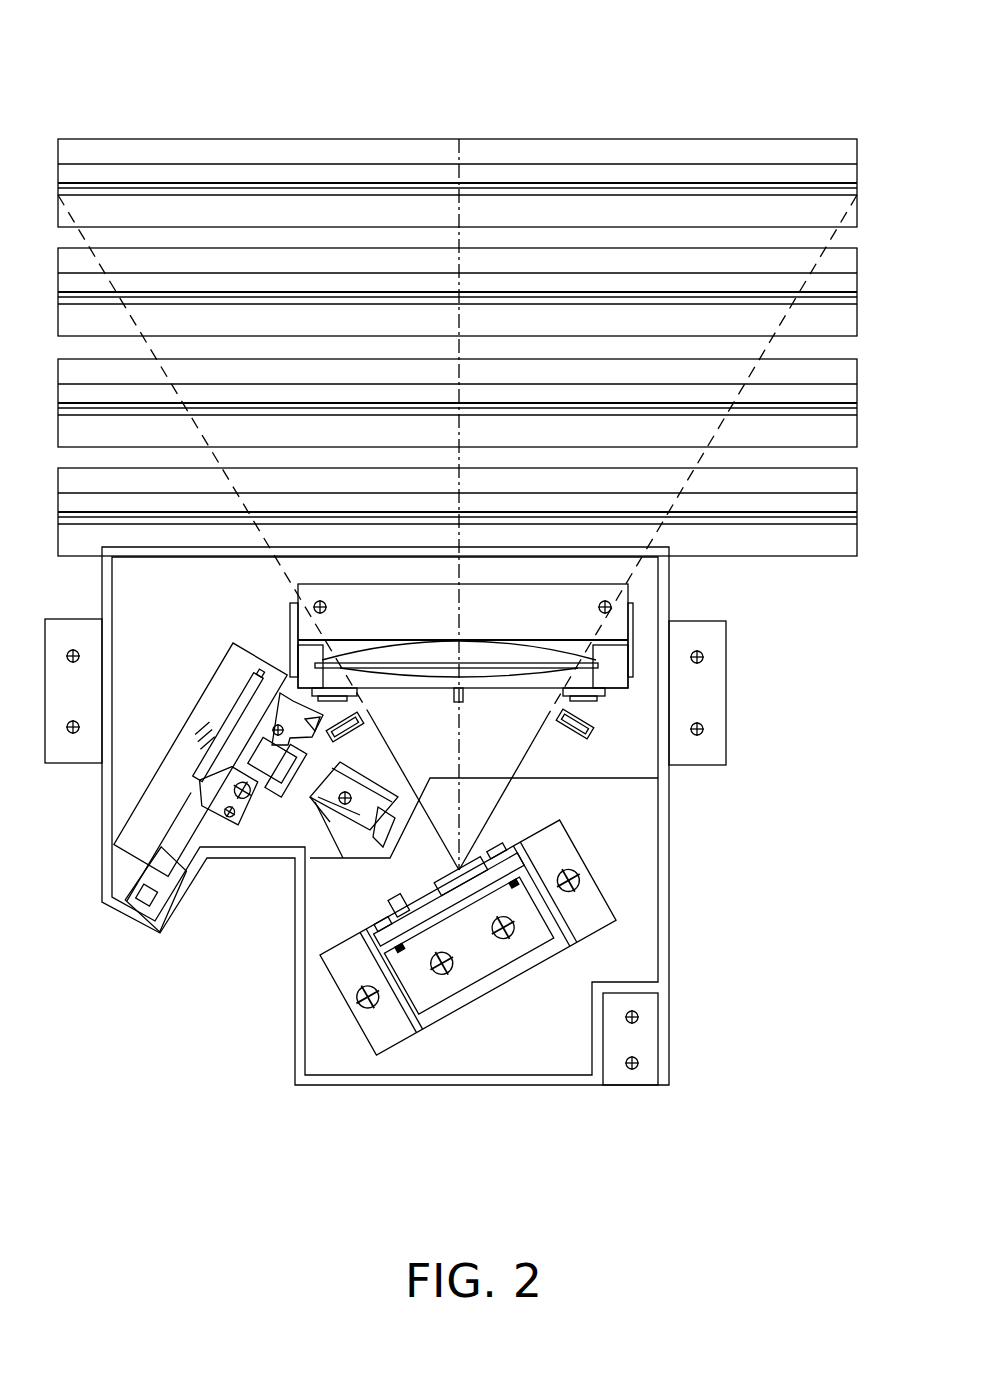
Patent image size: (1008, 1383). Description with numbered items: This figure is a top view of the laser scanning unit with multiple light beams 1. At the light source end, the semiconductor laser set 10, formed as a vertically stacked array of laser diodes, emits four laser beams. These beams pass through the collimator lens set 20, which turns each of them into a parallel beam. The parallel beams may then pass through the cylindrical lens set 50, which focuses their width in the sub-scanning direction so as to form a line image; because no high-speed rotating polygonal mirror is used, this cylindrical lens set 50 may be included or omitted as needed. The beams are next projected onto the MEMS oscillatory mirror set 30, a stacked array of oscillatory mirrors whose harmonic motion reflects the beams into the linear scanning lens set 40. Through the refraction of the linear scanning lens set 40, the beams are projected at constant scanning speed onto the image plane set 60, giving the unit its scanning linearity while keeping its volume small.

The laser scanning unit with multiple light beams 1 is at (559, 127).
The semiconductor laser set 10 is at (196, 749).
The collimator lens set 20 is at (238, 724).
The MEMS oscillatory mirror set 30 is at (433, 872).
The linear scanning lens set 40 is at (508, 704).
The cylindrical lens set 50 is at (333, 839).
The image plane set 60 is at (785, 567).